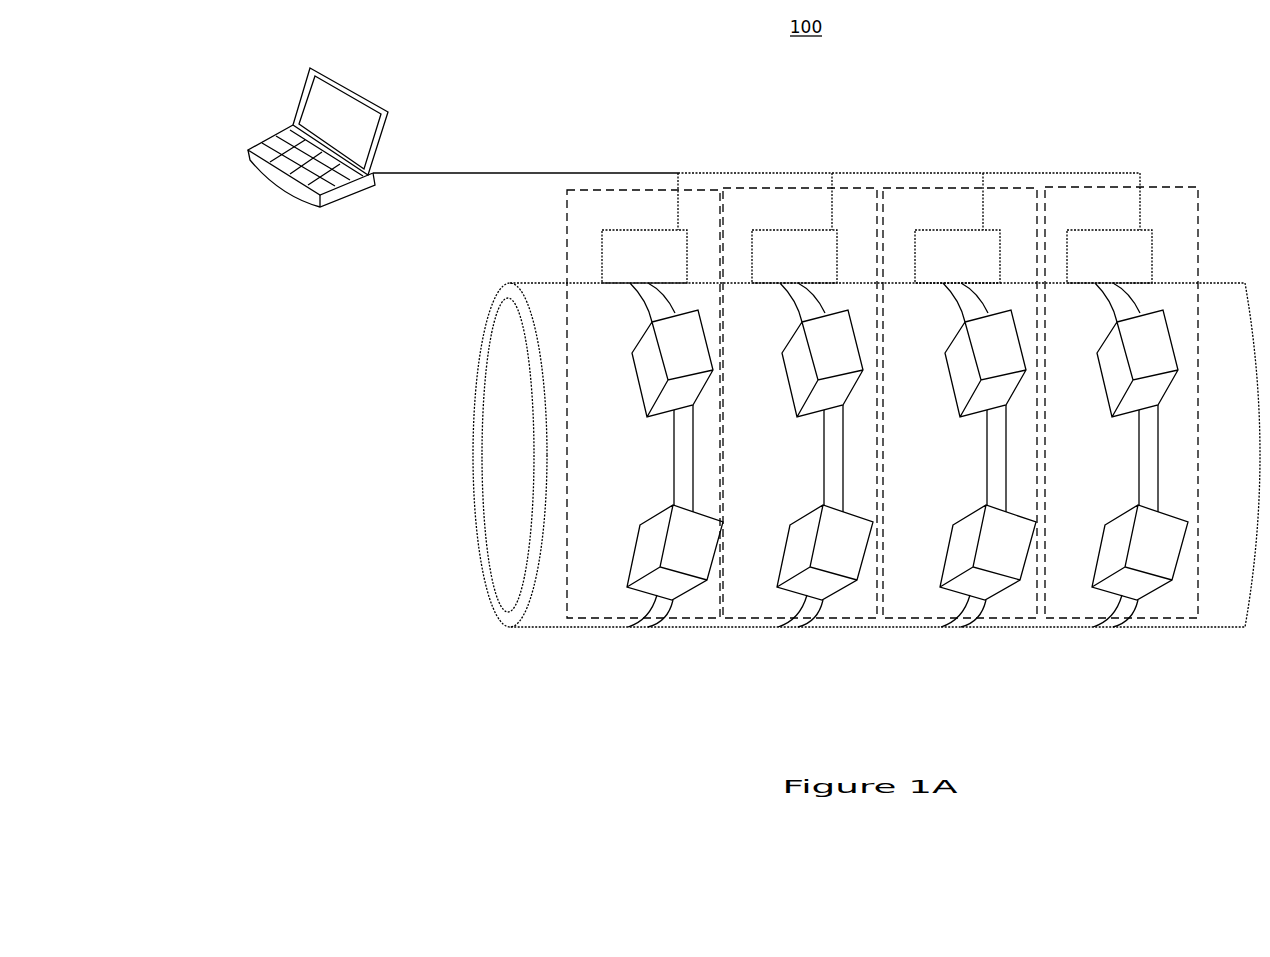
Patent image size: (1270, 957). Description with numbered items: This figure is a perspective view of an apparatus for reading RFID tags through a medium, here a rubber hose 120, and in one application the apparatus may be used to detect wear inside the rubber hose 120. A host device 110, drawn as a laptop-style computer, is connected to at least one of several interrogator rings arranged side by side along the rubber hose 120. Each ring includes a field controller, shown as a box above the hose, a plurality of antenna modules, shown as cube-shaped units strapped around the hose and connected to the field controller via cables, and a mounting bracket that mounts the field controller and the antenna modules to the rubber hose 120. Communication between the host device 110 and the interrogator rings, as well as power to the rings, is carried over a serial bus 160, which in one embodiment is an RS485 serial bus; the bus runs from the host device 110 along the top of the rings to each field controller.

The host device 110 is at (299, 87).
The rubber hose 120 is at (543, 279).
The serial bus 160 is at (581, 170).